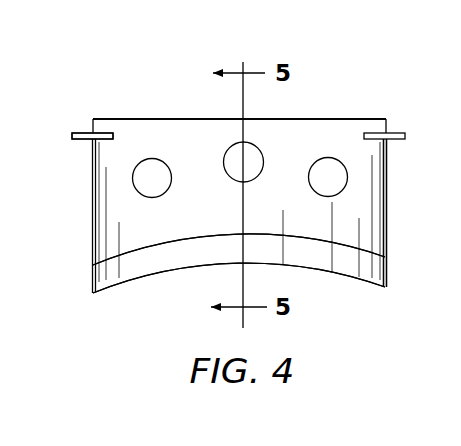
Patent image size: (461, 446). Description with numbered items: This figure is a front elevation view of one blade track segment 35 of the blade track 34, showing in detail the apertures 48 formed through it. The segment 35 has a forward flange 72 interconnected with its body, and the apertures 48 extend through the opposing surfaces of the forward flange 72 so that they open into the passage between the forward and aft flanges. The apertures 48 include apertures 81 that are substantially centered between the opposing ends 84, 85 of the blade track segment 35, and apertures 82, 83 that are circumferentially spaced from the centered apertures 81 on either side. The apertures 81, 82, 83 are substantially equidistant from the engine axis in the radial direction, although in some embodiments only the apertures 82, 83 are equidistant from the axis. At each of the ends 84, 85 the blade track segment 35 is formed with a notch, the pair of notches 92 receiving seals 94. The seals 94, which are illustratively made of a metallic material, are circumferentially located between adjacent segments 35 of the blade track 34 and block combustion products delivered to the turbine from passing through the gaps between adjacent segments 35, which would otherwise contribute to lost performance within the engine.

The blade track 34 is at (341, 43).
The blade track segment 35 is at (357, 118).
The apertures 48 is at (118, 160).
The forward flange 72 is at (276, 263).
The apertures (centered) 81 is at (263, 148).
The apertures (circumferentially spaced) 82 is at (158, 151).
The apertures (circumferentially spaced) 83 is at (350, 176).
The end of blade track segment 84 is at (79, 132).
The end of blade track segment 85 is at (389, 203).
The notches 92 is at (104, 132).
The seals 94 is at (75, 141).